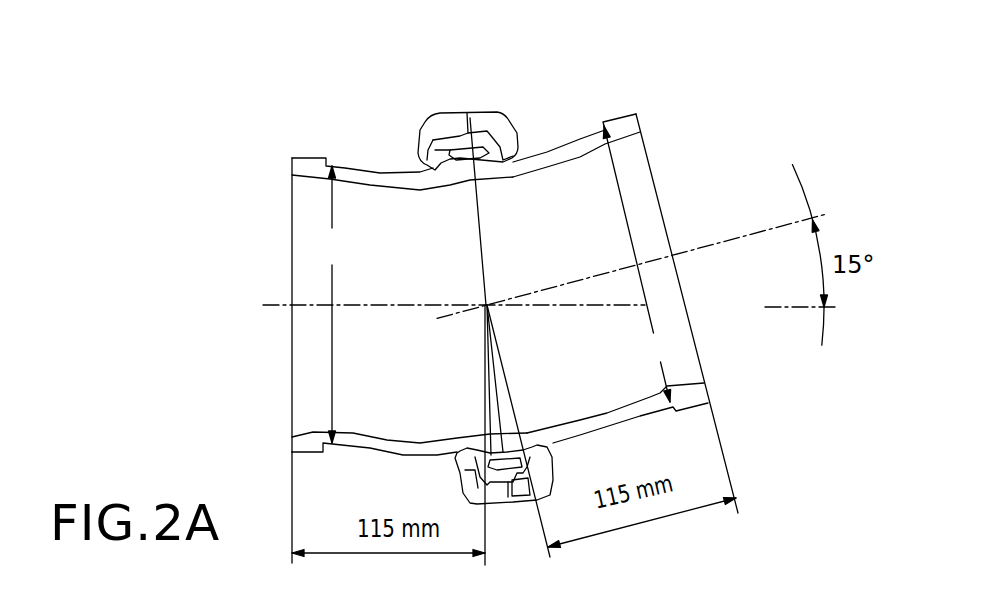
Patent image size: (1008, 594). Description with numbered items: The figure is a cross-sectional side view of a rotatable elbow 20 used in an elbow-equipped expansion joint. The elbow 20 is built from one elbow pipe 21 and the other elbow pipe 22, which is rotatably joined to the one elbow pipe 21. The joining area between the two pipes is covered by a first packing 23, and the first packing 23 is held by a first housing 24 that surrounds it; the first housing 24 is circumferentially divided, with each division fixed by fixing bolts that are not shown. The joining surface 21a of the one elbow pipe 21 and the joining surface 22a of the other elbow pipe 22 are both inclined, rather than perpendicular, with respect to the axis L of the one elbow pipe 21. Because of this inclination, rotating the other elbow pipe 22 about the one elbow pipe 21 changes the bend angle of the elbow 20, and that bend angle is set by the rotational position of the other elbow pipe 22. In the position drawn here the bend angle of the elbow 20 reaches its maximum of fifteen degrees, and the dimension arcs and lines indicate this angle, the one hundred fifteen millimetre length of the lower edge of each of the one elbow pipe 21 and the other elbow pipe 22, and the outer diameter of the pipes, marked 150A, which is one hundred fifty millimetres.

The elbow 20 is at (551, 106).
The one elbow pipe 21 is at (352, 165).
The other elbow pipe 22 is at (583, 140).
The first packing 23 is at (479, 120).
The first housing 24 is at (432, 117).
The joining surface 21a is at (478, 232).
The joining surface 22a is at (483, 381).
The rail width dimension 150A is at (494, 284).
The axis L is at (313, 307).